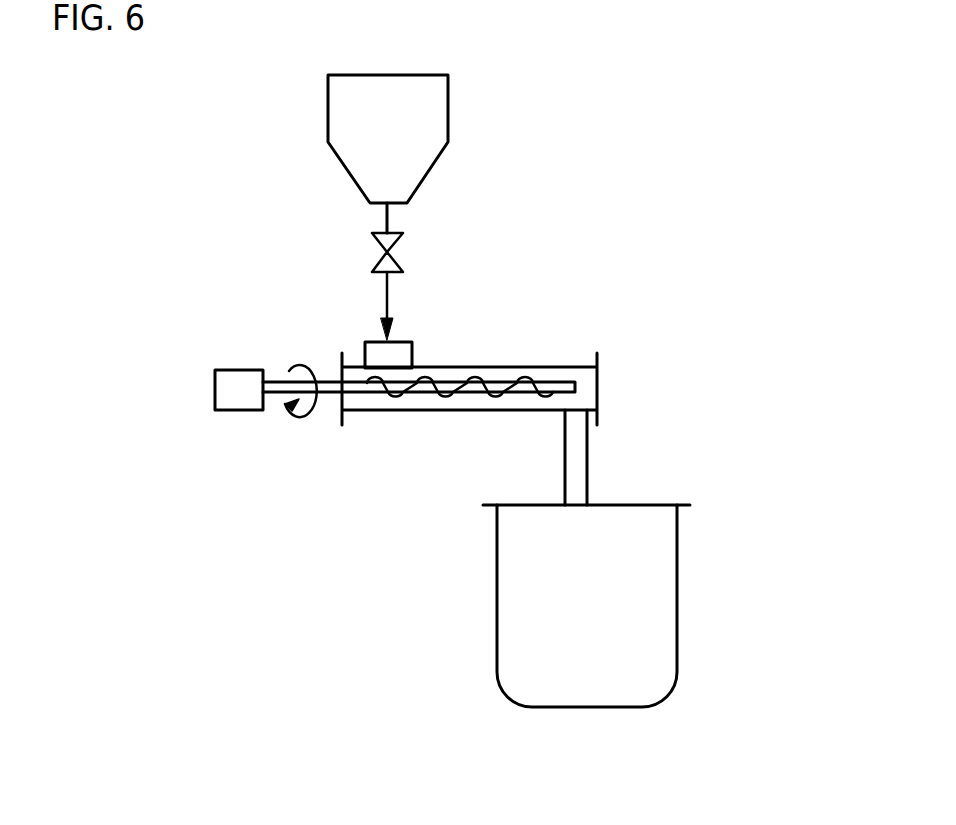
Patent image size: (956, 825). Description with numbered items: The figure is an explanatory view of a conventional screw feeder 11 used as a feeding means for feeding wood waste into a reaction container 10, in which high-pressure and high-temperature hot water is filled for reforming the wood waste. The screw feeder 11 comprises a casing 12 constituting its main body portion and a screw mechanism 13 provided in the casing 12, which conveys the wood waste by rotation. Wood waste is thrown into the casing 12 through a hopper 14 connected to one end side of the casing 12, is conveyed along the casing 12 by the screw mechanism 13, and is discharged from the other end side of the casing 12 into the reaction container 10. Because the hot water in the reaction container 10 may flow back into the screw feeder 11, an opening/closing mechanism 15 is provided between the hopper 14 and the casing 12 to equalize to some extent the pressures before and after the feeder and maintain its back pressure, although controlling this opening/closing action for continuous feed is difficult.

The reaction container 10 is at (677, 578).
The screw feeder 11 is at (415, 407).
The casing 12 is at (540, 367).
The screw mechanism 13 is at (500, 383).
The hopper 14 is at (448, 118).
The opening/closing mechanism 15 is at (383, 251).